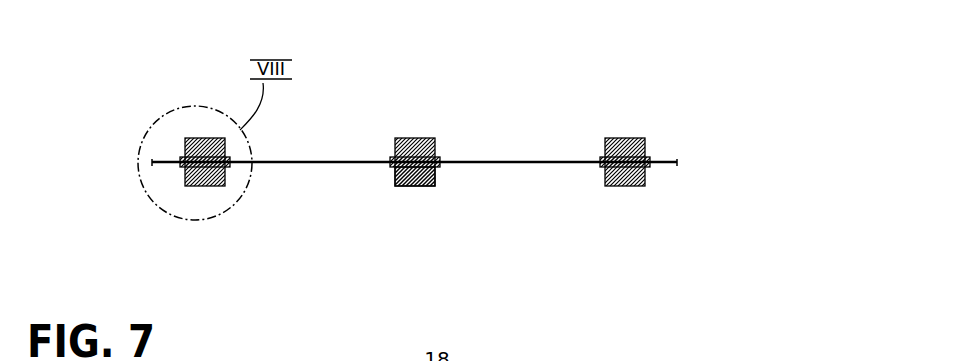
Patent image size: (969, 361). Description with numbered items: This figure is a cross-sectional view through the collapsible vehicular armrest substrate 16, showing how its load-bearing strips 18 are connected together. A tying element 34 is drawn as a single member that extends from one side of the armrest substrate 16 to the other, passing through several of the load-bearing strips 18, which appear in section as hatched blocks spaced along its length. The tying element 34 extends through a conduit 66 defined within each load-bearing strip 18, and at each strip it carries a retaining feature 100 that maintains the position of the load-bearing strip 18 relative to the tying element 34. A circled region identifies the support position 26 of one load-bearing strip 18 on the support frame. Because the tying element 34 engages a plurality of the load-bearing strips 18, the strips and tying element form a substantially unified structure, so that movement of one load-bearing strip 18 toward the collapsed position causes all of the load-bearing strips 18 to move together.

The collapsible vehicular armrest substrate 16 is at (574, 71).
The load-bearing strip 18 is at (417, 137).
The support position 26 is at (164, 89).
The tying element 34 is at (515, 162).
The conduit 66 is at (432, 172).
The retaining feature 100 is at (437, 158).